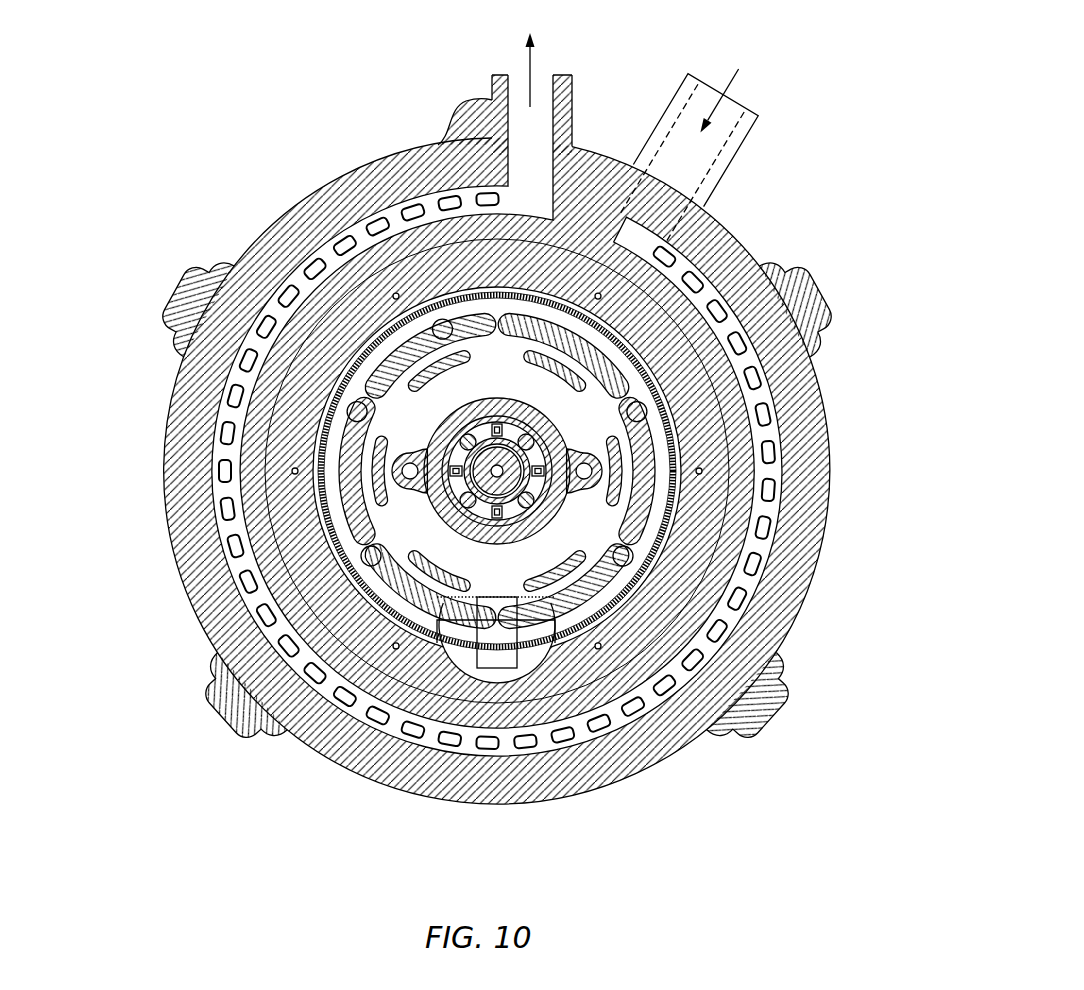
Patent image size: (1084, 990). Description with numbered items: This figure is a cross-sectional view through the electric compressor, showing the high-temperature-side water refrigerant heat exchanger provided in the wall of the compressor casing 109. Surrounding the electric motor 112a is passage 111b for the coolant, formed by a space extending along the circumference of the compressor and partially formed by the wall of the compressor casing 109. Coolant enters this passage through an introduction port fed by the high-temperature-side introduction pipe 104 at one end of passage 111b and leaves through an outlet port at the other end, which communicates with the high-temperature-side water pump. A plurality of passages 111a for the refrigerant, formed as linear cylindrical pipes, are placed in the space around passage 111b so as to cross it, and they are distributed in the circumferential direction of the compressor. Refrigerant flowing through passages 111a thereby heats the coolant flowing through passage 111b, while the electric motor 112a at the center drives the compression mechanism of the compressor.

The high-temperature-side introduction pipe 104 is at (752, 133).
The compressor casing 109 is at (812, 358).
The passages 111a is at (337, 244).
The passage 111b is at (273, 310).
The electric motor 112a is at (620, 549).